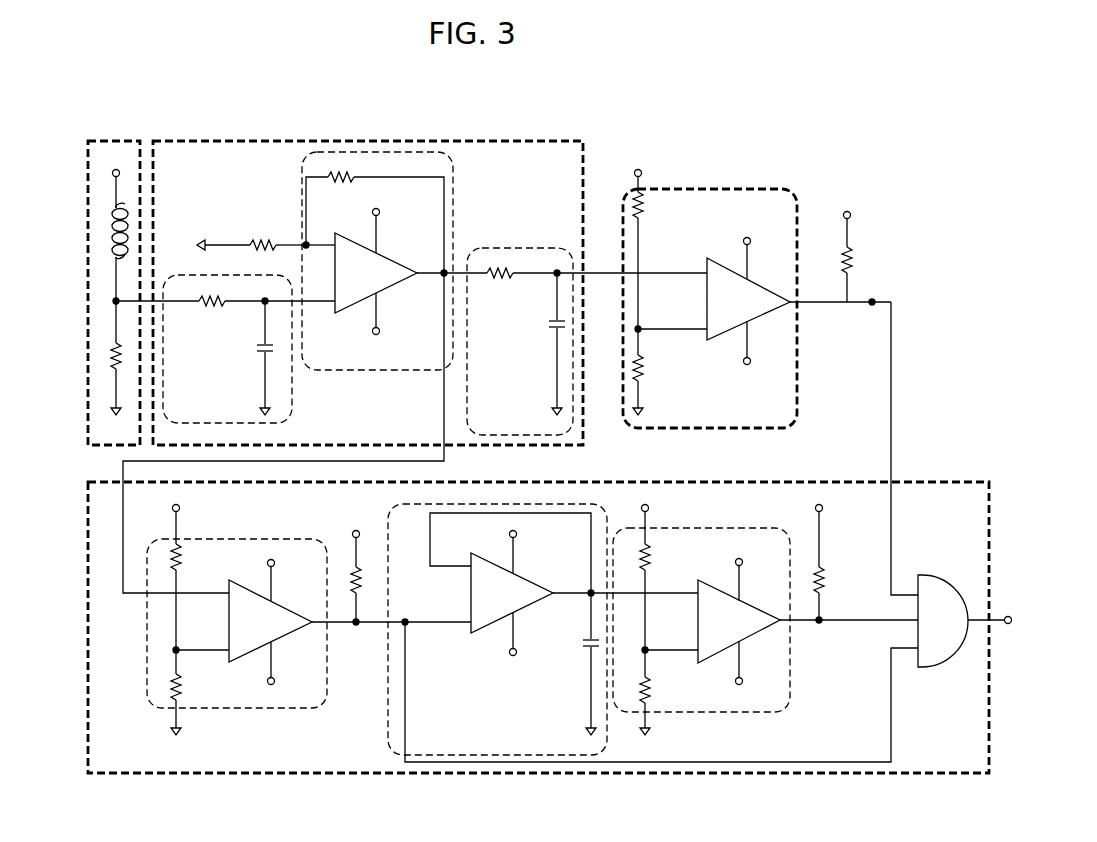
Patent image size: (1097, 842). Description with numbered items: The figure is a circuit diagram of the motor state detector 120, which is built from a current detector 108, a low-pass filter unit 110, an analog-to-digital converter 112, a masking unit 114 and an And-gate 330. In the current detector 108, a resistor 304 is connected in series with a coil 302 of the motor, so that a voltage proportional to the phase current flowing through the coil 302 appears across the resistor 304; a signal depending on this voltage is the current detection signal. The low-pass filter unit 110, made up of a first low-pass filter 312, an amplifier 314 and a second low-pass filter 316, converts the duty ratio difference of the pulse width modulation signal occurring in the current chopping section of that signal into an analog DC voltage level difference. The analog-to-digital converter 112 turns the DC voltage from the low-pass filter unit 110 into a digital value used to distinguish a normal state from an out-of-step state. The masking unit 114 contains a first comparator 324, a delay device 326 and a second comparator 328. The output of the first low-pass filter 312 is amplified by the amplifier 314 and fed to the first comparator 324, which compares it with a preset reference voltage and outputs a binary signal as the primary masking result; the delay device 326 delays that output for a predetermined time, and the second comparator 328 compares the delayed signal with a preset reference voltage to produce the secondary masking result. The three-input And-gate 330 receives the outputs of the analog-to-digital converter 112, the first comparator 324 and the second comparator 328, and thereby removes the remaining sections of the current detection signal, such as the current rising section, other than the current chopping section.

The motor state detector 120 is at (137, 77).
The current detector 108 is at (115, 141).
The low-pass filter unit 110 is at (264, 141).
The analog-to-digital converter 112 is at (715, 188).
The masking unit 114 is at (769, 482).
The coil 302 is at (107, 226).
The resistor 304 is at (109, 353).
The first low-pass filter 312 is at (292, 398).
The amplifier 314 is at (389, 152).
The second low-pass filter 316 is at (520, 248).
The first comparator 324 is at (252, 539).
The delay device 326 is at (539, 502).
The second comparator 328 is at (723, 528).
The And-gate 330 is at (932, 575).